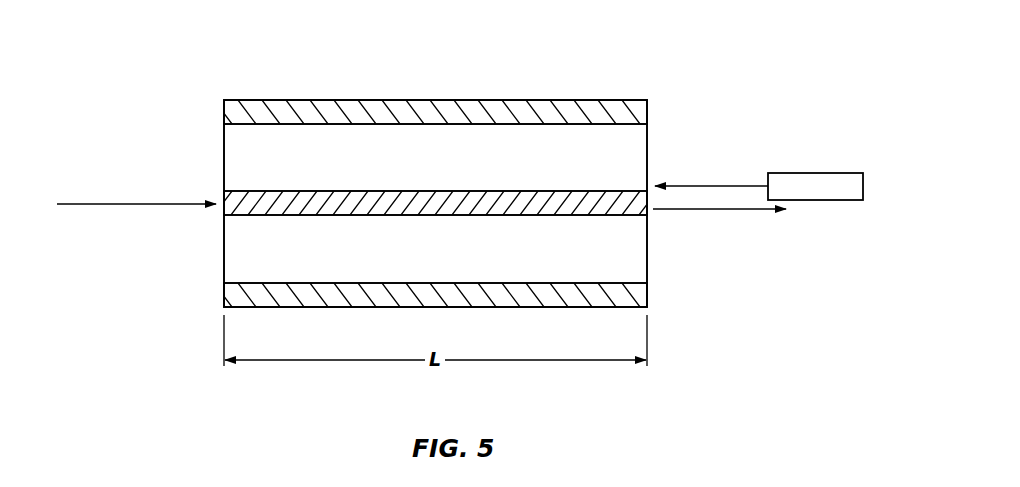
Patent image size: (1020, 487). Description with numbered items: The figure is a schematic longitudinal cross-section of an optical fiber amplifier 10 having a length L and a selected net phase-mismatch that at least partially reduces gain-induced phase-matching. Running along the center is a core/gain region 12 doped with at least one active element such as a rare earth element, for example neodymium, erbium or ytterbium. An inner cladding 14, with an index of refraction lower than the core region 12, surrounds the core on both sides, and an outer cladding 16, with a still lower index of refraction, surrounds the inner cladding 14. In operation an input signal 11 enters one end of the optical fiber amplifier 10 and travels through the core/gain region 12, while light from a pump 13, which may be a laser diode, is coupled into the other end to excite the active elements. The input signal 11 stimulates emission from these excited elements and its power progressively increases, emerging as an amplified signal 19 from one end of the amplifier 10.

The optical fiber amplifier 10 is at (660, 74).
The input signal 11 is at (138, 191).
The core/gain region 12 is at (263, 208).
The pump 13 is at (760, 186).
The inner cladding 14 is at (252, 149).
The outer cladding 16 is at (441, 112).
The amplified signal 19 is at (719, 231).